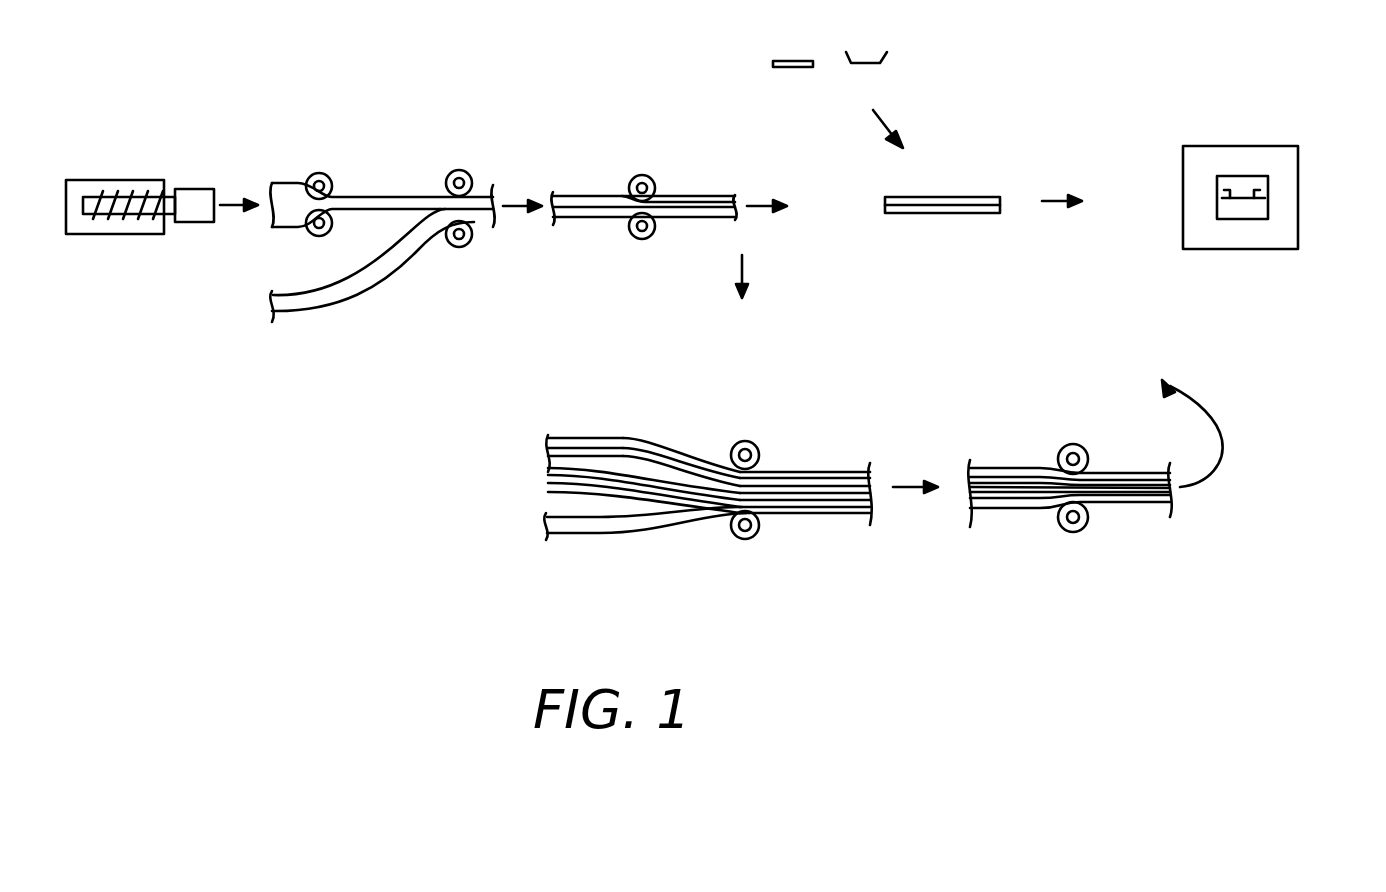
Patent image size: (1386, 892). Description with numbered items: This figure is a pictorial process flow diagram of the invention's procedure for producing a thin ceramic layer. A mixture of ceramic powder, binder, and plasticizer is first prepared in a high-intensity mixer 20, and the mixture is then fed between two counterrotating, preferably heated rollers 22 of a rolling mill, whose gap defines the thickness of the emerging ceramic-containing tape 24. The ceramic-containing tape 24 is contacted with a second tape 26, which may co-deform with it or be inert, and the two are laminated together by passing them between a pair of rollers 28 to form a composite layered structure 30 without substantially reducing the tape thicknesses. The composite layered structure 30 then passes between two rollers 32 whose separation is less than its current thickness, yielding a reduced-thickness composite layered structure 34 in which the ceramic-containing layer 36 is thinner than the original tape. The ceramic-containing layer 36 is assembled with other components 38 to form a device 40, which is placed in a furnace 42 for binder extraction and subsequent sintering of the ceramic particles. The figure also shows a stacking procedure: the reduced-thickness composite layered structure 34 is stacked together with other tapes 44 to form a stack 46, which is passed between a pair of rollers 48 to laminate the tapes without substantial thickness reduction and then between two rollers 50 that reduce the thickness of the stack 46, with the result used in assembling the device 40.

The high-intensity mixer 20 is at (112, 180).
The counterrotating rollers 22 is at (318, 172).
The ceramic-containing tape 24 is at (395, 197).
The second tape 26 is at (363, 288).
The pair of rollers 28 is at (460, 248).
The composite layered structure 30 is at (483, 222).
The rollers 32 is at (638, 176).
The reduced-thickness composite layered structure 34 is at (700, 196).
The ceramic-containing layer 36 is at (737, 198).
The other components 38 is at (846, 52).
The device 40 is at (1268, 197).
The furnace 42 is at (1268, 249).
The other tapes 44 is at (565, 536).
The stack 46 is at (718, 500).
The pair of rollers 48 is at (750, 440).
The rollers 50 is at (1075, 534).